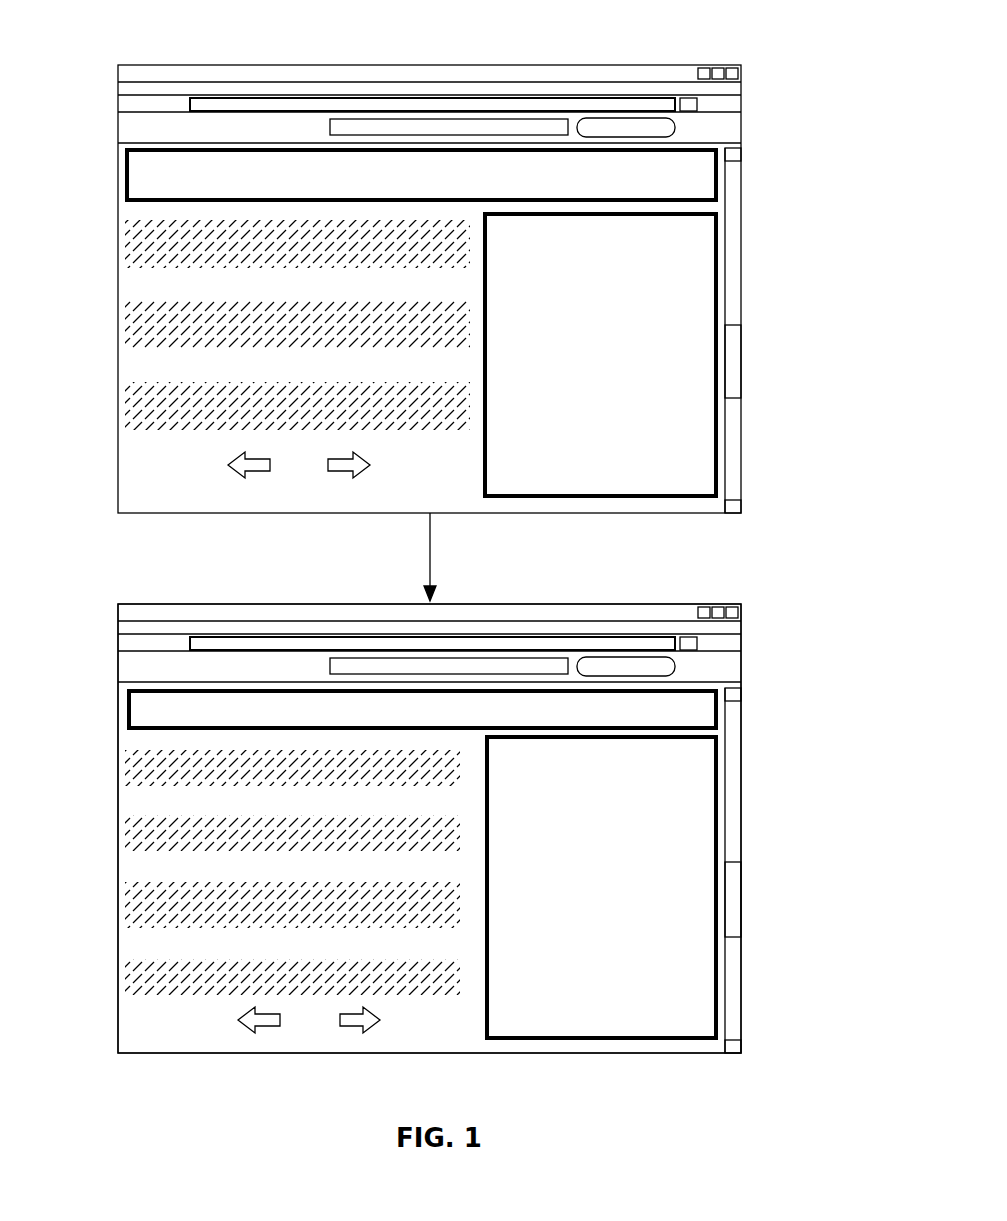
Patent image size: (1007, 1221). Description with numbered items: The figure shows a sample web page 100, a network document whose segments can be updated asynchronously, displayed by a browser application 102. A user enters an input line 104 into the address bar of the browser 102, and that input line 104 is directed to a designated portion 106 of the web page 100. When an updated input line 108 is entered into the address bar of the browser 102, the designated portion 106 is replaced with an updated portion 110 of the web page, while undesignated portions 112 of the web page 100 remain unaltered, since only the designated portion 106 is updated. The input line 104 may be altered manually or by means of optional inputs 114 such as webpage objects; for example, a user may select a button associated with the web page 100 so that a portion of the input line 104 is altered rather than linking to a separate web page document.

The web page 100 is at (808, 604).
The browser application 102 is at (118, 74).
The input line 104 is at (418, 96).
The designated portion 106 is at (118, 290).
The updated input line 108 is at (335, 606).
The updated portion 110 is at (118, 828).
The undesignated portions 112 is at (670, 180).
The optional inputs 114 is at (265, 470).